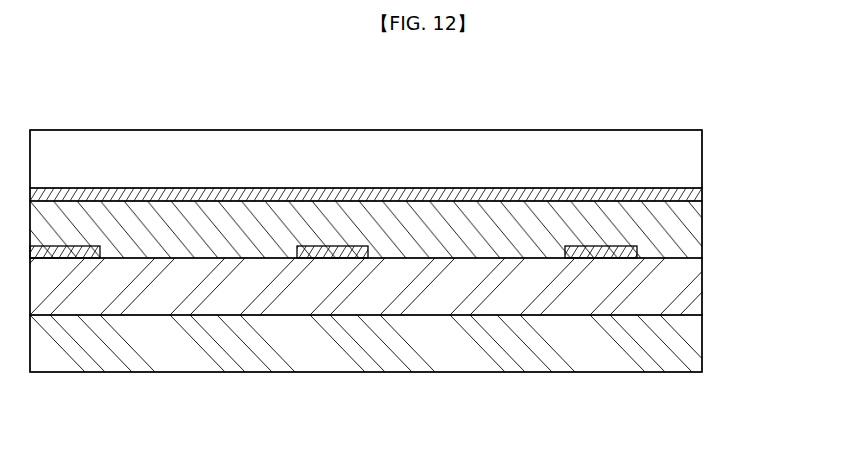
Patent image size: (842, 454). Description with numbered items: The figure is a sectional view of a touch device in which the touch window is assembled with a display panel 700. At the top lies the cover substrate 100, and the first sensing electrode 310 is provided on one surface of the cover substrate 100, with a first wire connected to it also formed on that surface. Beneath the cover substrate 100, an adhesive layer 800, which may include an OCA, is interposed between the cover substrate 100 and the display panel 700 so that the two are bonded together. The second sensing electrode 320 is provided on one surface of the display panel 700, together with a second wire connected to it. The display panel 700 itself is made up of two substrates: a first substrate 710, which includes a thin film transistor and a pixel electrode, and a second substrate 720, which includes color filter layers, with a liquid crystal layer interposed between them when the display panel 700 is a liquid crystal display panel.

The cover substrate 100 is at (695, 161).
The first sensing electrode 310 is at (693, 194).
The adhesive layer 800 is at (693, 228).
The second sensing electrode 320 is at (334, 253).
The second substrate 720 is at (693, 289).
The first substrate 710 is at (399, 343).
The display panel 700 is at (424, 315).